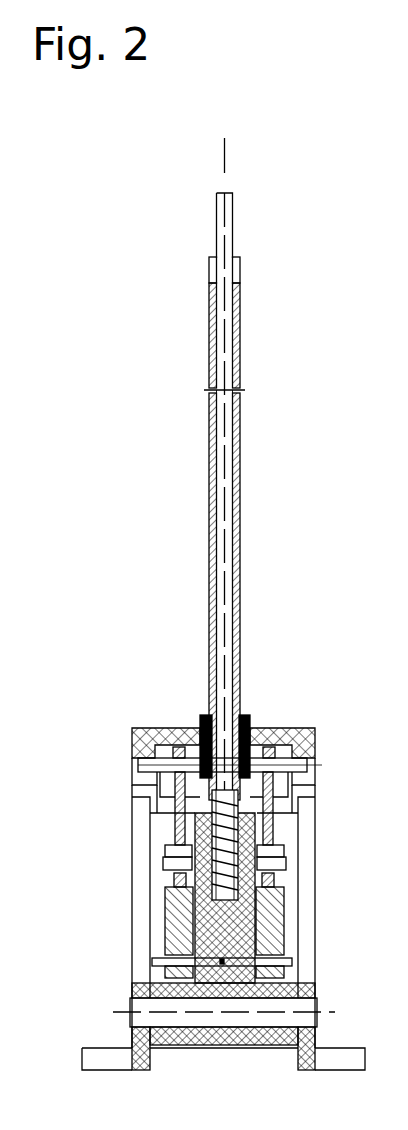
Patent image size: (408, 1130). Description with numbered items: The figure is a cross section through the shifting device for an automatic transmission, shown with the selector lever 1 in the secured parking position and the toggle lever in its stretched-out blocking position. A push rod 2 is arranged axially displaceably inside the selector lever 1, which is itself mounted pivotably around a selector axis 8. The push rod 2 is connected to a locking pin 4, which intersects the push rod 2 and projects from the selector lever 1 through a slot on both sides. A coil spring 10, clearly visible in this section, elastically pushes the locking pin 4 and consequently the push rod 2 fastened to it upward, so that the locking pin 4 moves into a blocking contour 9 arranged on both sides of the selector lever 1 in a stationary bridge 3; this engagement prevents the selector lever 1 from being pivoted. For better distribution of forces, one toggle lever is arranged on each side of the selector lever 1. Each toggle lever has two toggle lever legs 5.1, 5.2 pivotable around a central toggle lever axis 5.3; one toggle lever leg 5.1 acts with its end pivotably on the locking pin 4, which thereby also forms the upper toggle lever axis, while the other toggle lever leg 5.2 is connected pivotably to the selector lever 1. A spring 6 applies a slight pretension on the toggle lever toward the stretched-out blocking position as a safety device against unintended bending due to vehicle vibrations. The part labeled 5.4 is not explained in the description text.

The selector lever 1 is at (209, 365).
The push rod 2 is at (236, 243).
The bridge 3 is at (272, 730).
The locking pin 4 is at (137, 762).
The toggle lever leg 5.1 is at (293, 778).
The toggle lever leg 5.2 is at (165, 930).
The central toggle lever axis 5.3 is at (163, 862).
The right lower block 5.4 is at (268, 950).
The spring 6 is at (283, 855).
The selector axis 8 is at (316, 1003).
The blocking contour 9 is at (140, 776).
The coil spring 10 is at (195, 900).